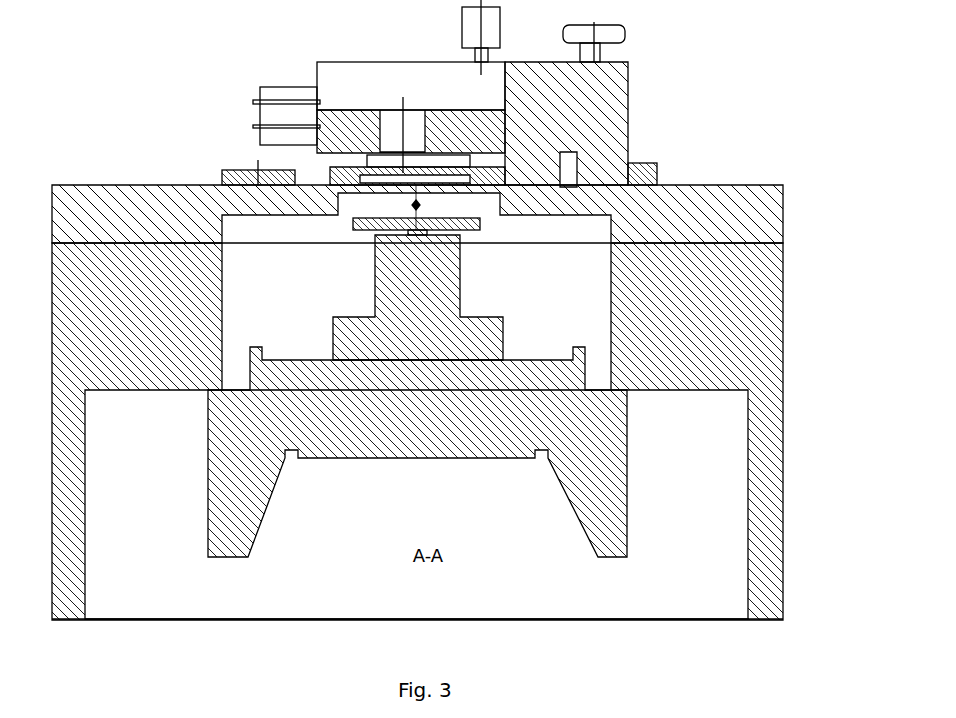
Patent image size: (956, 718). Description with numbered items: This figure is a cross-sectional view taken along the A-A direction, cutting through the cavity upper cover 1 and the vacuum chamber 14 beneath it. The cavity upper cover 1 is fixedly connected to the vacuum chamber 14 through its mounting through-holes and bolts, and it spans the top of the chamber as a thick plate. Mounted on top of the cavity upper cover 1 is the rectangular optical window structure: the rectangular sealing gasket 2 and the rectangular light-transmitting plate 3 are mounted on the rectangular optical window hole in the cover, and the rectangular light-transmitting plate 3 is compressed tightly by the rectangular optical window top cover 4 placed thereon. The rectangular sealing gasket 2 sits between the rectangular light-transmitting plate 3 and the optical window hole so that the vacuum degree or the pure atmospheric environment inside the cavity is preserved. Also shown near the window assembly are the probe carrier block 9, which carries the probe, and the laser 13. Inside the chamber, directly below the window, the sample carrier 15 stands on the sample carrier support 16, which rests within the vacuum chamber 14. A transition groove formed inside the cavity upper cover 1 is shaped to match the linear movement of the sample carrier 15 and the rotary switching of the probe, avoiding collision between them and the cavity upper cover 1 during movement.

The cavity upper cover 1 is at (188, 205).
The rectangular sealing gasket 2 is at (477, 182).
The rectangular light-transmitting plate 3 is at (403, 170).
The rectangular optical window top cover 4 is at (357, 187).
The probe carrier block 9 is at (372, 203).
The laser 13 is at (562, 137).
The vacuum chamber 14 is at (717, 327).
The sample carrier 15 is at (440, 268).
The sample carrier support 16 is at (610, 518).